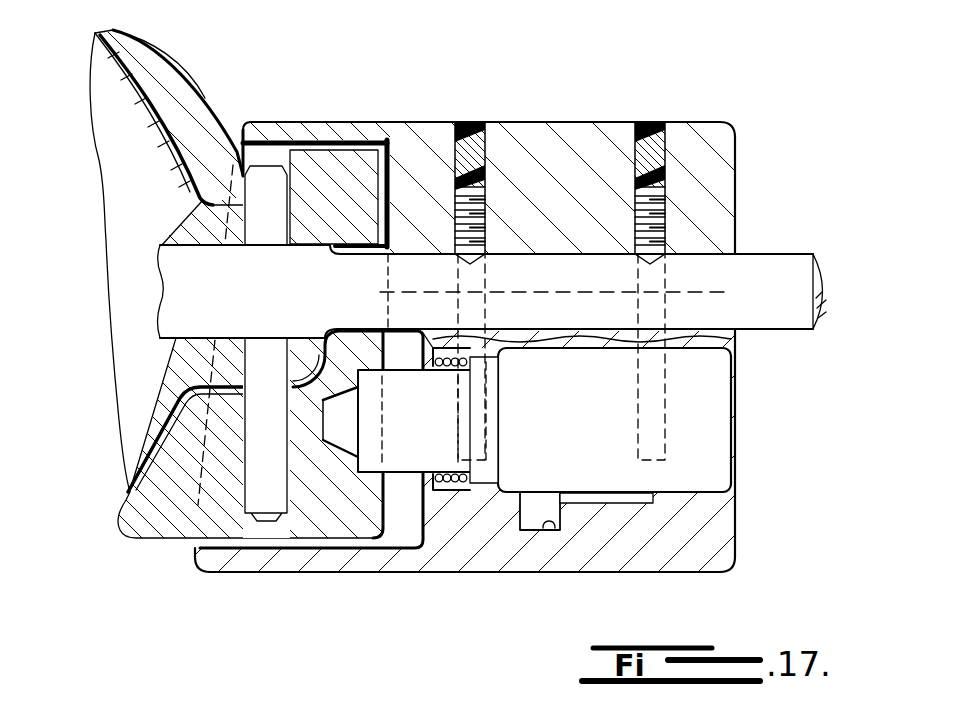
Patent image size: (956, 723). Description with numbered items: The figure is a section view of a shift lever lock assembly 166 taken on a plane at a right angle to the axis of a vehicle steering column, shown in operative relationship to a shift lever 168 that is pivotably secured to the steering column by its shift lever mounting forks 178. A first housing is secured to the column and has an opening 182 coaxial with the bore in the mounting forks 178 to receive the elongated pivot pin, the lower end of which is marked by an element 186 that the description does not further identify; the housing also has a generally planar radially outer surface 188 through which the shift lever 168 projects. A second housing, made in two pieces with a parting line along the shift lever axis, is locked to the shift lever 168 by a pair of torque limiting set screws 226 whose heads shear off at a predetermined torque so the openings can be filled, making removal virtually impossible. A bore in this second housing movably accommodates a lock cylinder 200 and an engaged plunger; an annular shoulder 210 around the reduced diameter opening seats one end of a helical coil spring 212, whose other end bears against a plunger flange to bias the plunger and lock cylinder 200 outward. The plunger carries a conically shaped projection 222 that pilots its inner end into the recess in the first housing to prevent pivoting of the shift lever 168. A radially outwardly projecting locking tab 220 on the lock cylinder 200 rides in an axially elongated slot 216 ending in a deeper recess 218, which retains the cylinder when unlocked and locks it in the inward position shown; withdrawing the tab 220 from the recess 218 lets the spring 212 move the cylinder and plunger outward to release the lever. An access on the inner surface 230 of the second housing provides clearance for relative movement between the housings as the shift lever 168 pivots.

The shift lever lock assembly 166 is at (755, 121).
The shift lever 168 is at (486, 291).
The shift lever mounting forks 178 is at (308, 216).
The opening 182 is at (283, 158).
The pin end 186 is at (270, 510).
The radially outer surface 188 is at (383, 172).
The lock cylinder 200 is at (592, 421).
The annular shoulder 210 is at (447, 490).
The helical coil spring 212 is at (462, 483).
The slot 216 is at (621, 498).
The recess 218 is at (548, 527).
The locking tab 220 is at (532, 528).
The conically shaped projection 222 is at (346, 432).
The torque limiting set screws 226 is at (640, 198).
The inner surface 230 is at (390, 200).